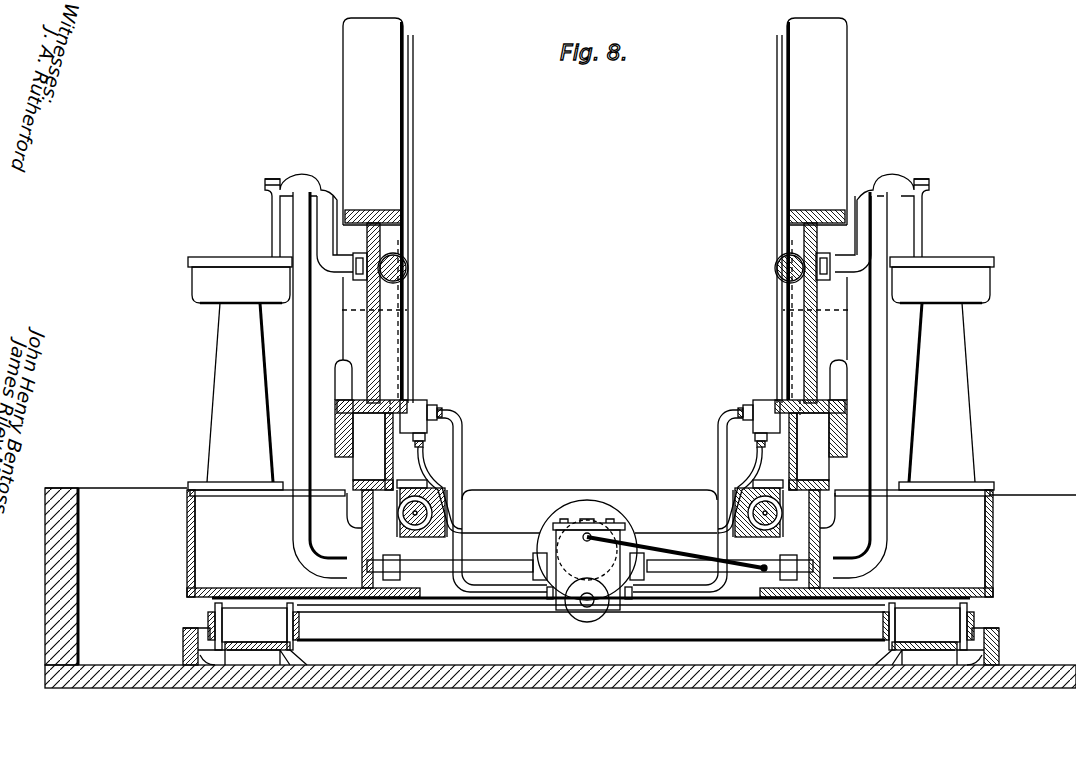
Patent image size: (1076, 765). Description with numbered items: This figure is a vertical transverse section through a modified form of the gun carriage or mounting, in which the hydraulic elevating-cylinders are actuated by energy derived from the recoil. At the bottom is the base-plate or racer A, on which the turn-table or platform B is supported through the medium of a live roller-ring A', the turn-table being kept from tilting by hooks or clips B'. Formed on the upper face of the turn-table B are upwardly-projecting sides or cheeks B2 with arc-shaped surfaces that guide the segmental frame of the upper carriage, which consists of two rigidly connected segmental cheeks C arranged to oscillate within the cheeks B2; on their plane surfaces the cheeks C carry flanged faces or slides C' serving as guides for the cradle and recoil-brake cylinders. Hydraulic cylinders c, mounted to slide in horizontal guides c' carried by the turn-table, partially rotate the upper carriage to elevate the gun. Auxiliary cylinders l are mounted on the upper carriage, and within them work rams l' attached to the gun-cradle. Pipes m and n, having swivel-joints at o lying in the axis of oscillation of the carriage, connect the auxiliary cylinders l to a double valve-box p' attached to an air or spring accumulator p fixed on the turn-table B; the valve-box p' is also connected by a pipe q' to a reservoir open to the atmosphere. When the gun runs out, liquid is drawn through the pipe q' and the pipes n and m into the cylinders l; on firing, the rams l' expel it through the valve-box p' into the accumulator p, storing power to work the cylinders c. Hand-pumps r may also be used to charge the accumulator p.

The base-plate or racer A is at (591, 675).
The live roller-ring A' is at (591, 626).
The turn-table or platform B is at (590, 543).
The hooks or clips B' is at (589, 474).
The upwardly-projecting sides or cheeks B2 is at (355, 493).
The segmental cheeks C is at (592, 313).
The flanged faces or slides C' is at (595, 216).
The hydraulic cylinders c is at (590, 519).
The horizontal guides c' is at (588, 524).
The auxiliary cylinders l is at (591, 270).
The rams l' is at (591, 253).
The pipe m is at (329, 273).
The pipe n is at (298, 357).
The swivel-joints o is at (302, 180).
The air or spring accumulator p is at (652, 554).
The double valve-box p' is at (586, 542).
The pipe q' is at (590, 605).
The hand-pumps r is at (436, 405).